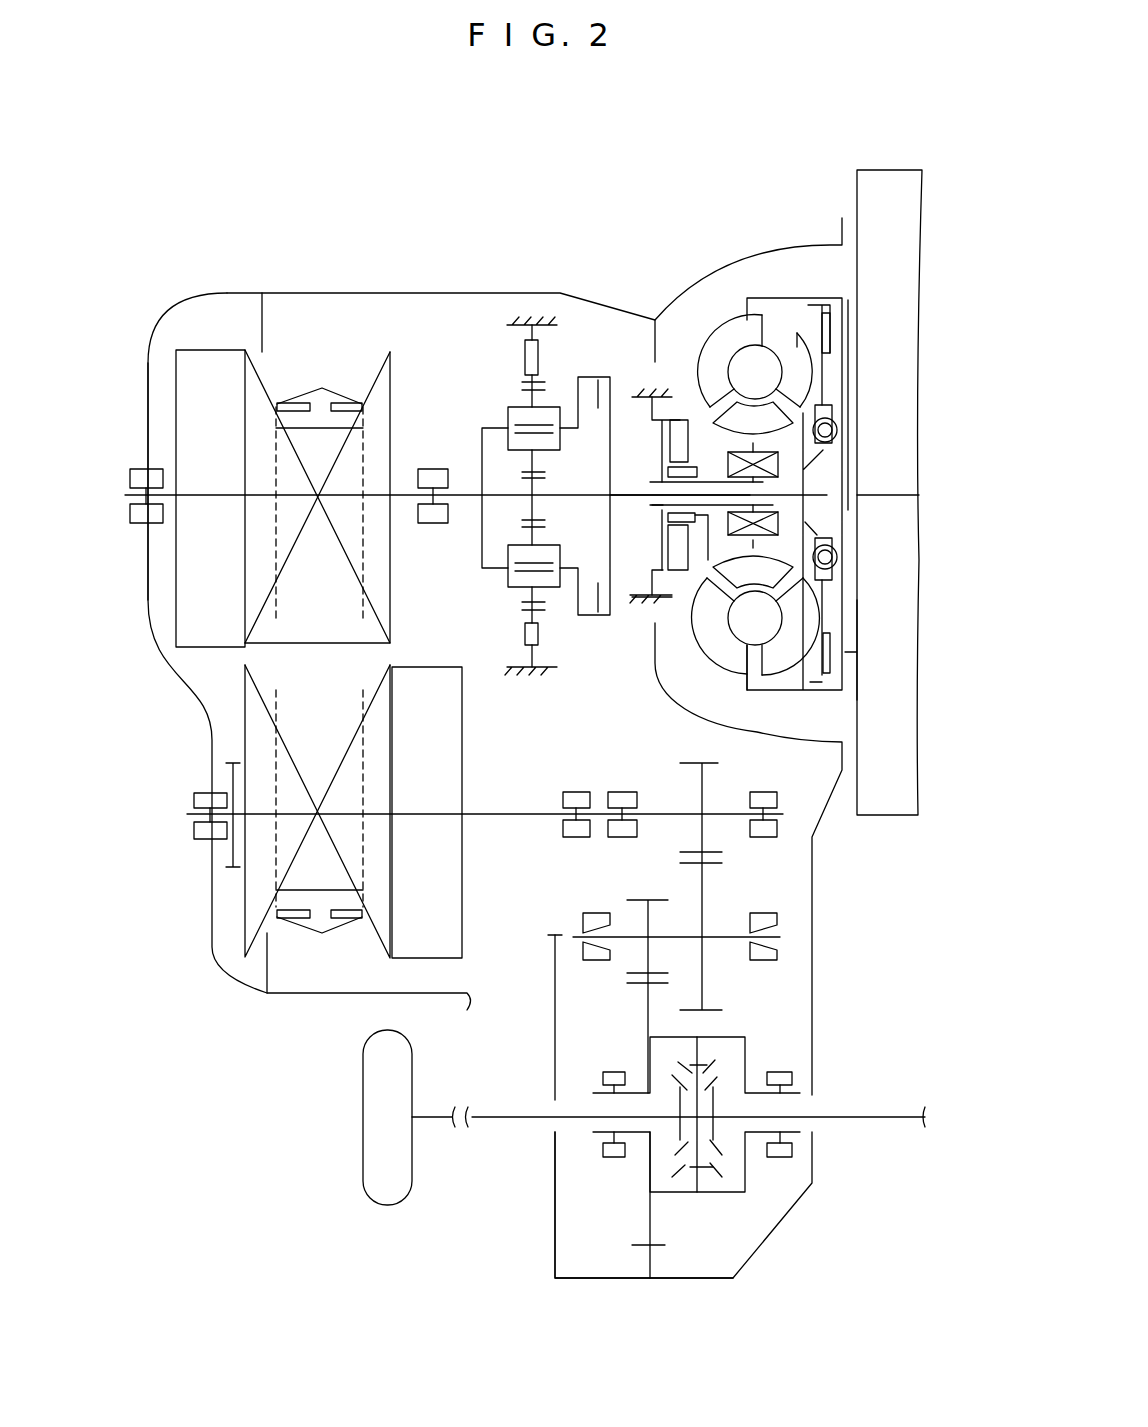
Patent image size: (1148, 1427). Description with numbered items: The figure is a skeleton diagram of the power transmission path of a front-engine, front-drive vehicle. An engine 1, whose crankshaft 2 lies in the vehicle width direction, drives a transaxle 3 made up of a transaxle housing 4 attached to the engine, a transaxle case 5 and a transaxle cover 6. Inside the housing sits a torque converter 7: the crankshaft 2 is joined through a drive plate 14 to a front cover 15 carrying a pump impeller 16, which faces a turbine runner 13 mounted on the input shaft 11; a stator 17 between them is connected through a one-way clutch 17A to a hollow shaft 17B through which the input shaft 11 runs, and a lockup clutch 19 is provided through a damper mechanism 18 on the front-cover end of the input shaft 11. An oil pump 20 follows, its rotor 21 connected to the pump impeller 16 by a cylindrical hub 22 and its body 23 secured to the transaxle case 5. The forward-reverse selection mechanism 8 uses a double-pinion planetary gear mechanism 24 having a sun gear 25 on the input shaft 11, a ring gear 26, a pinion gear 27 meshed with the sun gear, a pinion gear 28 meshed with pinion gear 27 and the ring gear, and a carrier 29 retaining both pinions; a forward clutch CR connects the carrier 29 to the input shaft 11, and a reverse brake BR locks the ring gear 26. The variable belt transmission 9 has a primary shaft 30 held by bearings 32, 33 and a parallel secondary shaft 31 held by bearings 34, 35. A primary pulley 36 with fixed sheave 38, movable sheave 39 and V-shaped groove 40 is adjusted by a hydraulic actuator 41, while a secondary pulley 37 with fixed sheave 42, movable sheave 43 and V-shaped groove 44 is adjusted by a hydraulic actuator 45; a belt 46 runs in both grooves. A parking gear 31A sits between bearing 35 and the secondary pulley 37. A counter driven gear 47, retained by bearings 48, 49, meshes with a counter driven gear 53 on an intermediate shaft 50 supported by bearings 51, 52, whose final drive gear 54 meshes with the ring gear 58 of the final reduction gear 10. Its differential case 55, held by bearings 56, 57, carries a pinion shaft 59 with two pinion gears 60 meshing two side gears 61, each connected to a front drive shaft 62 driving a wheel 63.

The engine 1 is at (880, 170).
The crankshaft 2 is at (882, 495).
The transaxle 3 is at (420, 245).
The transaxle housing 4 is at (775, 248).
The transaxle case 5 is at (500, 292).
The transaxle cover 6 is at (148, 360).
The torque converter 7 is at (725, 325).
The forward-reverse selection mechanism 8 is at (550, 366).
The variable belt transmission 9 is at (315, 487).
The final reduction gear 10 is at (630, 1200).
The input shaft 11 is at (632, 495).
The turbine runner 13 is at (775, 665).
The drive plate 14 is at (857, 640).
The front cover 15 is at (848, 302).
The pump impeller 16 is at (710, 645).
The stator 17 is at (753, 570).
The one-way clutch 17A is at (800, 520).
The hollow shaft 17B is at (665, 515).
The damper mechanism 18 is at (832, 408).
The lockup clutch 19 is at (830, 680).
The oil pump 20 is at (678, 418).
The rotor 21 is at (688, 565).
The hub 22 is at (753, 442).
The body 23 is at (632, 600).
The planetary gear mechanism 24 is at (500, 412).
The sun gear 25 is at (545, 525).
The ring gear 26 is at (540, 615).
The pinion gear 27 is at (545, 477).
The pinion gear 28 is at (525, 600).
The carrier 29 is at (545, 560).
The primary shaft 30 is at (400, 495).
The secondary shaft 31 is at (505, 818).
The parking gear 31A is at (232, 868).
The bearing 32 is at (432, 530).
The bearing 33 is at (145, 530).
The bearing 34 is at (575, 790).
The bearing 35 is at (195, 793).
The primary pulley 36 is at (335, 585).
The secondary pulley 37 is at (315, 804).
The fixed sheave 38 is at (385, 598).
The movable sheave 39 is at (258, 595).
The V-shaped groove 40 is at (315, 435).
The hydraulic actuator 41 is at (220, 365).
The fixed sheave 42 is at (247, 690).
The movable sheave 43 is at (355, 715).
The V-shaped groove 44 is at (358, 870).
The hydraulic actuator 45 is at (462, 958).
The belt 46 is at (322, 393).
The counter driven gear 47 is at (700, 760).
The bearing 48 is at (622, 790).
The bearing 49 is at (770, 840).
The intermediate shaft 50 is at (720, 940).
The bearing 51 is at (600, 960).
The bearing 52 is at (780, 948).
The counter driven gear 53 is at (710, 863).
The final drive gear 54 is at (635, 900).
The differential case 55 is at (713, 1195).
The bearing 56 is at (612, 1158).
The bearing 57 is at (778, 1072).
The ring gear 58 is at (665, 985).
The pinion shaft 59 is at (690, 1180).
The pinion gear 60 is at (680, 1062).
The side gear 61 is at (638, 1178).
The front drive shaft 62 is at (510, 1125).
The wheel 63 is at (365, 1140).
The reverse brake BR is at (525, 640).
The forward clutch CR is at (602, 375).